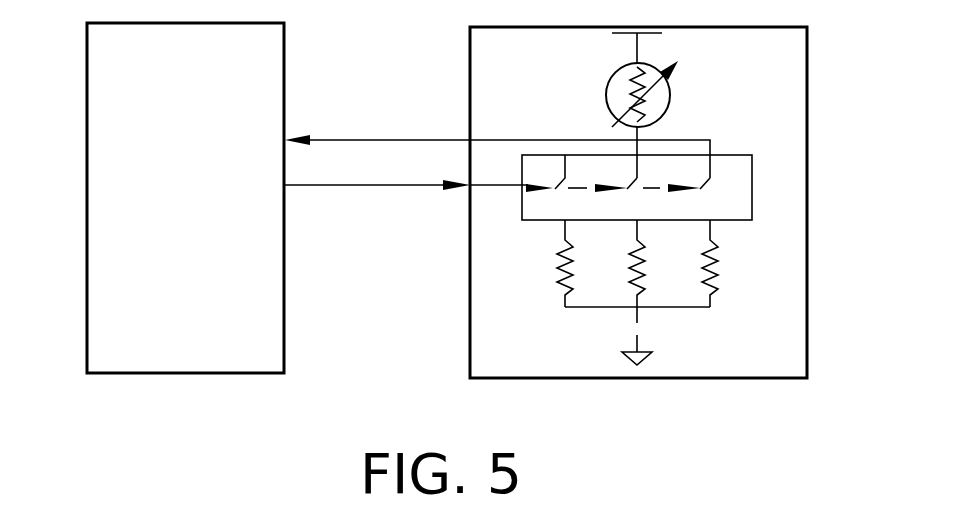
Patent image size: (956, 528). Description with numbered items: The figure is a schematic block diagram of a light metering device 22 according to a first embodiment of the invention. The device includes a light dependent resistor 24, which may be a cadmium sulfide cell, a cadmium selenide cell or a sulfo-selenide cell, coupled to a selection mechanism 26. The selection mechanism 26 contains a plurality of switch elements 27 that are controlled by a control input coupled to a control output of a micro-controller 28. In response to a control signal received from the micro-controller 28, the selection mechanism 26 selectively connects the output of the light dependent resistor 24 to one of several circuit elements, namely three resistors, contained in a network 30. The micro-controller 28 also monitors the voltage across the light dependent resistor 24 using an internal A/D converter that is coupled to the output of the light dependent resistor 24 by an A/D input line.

The light metering device 22 is at (808, 205).
The light dependent resistor 24 is at (607, 93).
The selection mechanism 26 is at (523, 221).
The switch elements 27 is at (715, 200).
The micro-controller 28 is at (87, 45).
The network 30 is at (703, 325).